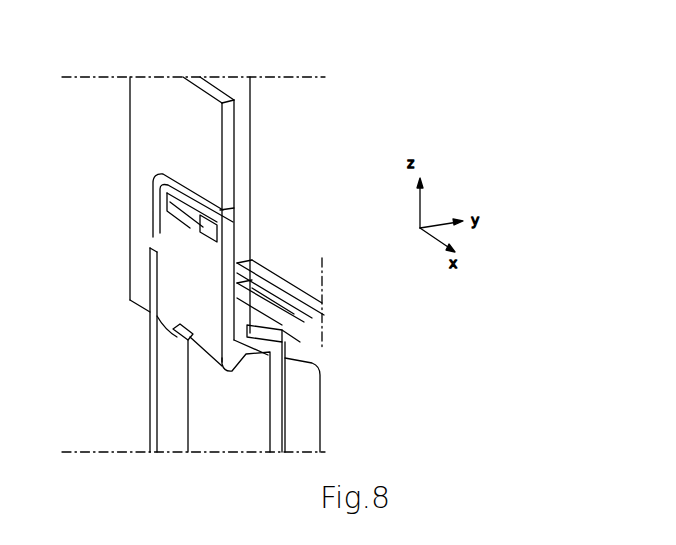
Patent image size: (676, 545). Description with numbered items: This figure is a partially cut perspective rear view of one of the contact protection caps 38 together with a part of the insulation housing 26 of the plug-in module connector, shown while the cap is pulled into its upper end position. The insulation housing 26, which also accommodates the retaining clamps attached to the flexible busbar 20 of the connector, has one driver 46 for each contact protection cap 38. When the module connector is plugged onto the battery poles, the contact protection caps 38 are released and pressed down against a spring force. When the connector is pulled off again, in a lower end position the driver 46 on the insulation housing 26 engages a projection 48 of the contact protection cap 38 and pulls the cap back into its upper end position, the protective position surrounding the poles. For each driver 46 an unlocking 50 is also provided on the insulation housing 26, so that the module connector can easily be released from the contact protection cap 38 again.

The flexible busbar 20 is at (298, 403).
The insulation housing 26 is at (141, 133).
The contact protection cap 38 is at (208, 436).
The driver 46 is at (211, 368).
The projection 48 is at (283, 338).
The unlocking 50 is at (155, 236).